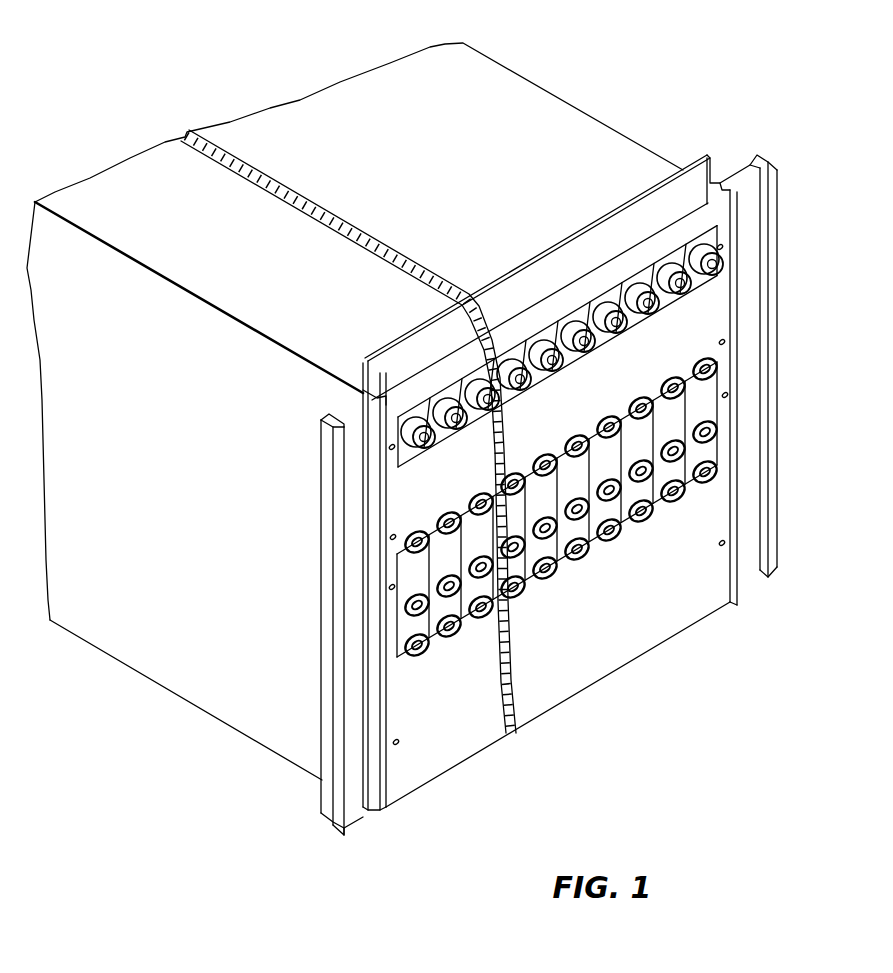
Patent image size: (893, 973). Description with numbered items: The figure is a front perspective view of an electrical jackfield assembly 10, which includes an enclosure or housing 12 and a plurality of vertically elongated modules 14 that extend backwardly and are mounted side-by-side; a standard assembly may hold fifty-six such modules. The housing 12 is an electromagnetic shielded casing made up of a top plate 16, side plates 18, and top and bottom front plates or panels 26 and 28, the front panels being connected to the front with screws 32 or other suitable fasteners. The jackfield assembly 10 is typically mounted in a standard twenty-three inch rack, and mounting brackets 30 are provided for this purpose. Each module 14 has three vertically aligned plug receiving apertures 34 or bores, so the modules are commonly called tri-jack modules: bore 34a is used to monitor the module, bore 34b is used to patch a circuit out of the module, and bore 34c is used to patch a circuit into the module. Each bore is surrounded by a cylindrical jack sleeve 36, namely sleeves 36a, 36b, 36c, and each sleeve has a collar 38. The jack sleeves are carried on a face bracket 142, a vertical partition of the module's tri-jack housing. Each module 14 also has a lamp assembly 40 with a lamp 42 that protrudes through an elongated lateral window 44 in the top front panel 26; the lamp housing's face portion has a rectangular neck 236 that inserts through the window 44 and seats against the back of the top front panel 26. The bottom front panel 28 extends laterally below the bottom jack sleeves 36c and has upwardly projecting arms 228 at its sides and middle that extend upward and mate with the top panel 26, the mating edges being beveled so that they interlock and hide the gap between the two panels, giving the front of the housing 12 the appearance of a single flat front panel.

The electrical jackfield assembly 10 is at (579, 73).
The housing 12 is at (607, 113).
The module 14 is at (704, 389).
The top plate 16 is at (505, 86).
The side plate 18 is at (192, 676).
The top front panel 26 is at (714, 320).
The bottom front panel 28 is at (714, 527).
The mounting bracket 30 is at (355, 797).
The screw 32 is at (401, 741).
The plug receiving aperture 34 is at (643, 458).
The plug receiving bore 34a is at (697, 362).
The plug receiving bore 34b is at (708, 425).
The plug receiving bore 34c is at (704, 496).
The cylindrical jack sleeve 36 is at (545, 506).
The cylindrical jack sleeve 36a is at (597, 420).
The cylindrical jack sleeve 36b is at (609, 475).
The cylindrical jack sleeve 36c is at (553, 578).
The collar 38 is at (416, 660).
The lamp assembly 40 is at (705, 228).
The lamp 42 is at (720, 266).
The elongated lateral window 44 is at (410, 470).
The face bracket 142 is at (445, 555).
The upwardly projecting arm 228 is at (725, 371).
The rectangular neck 236 is at (425, 412).